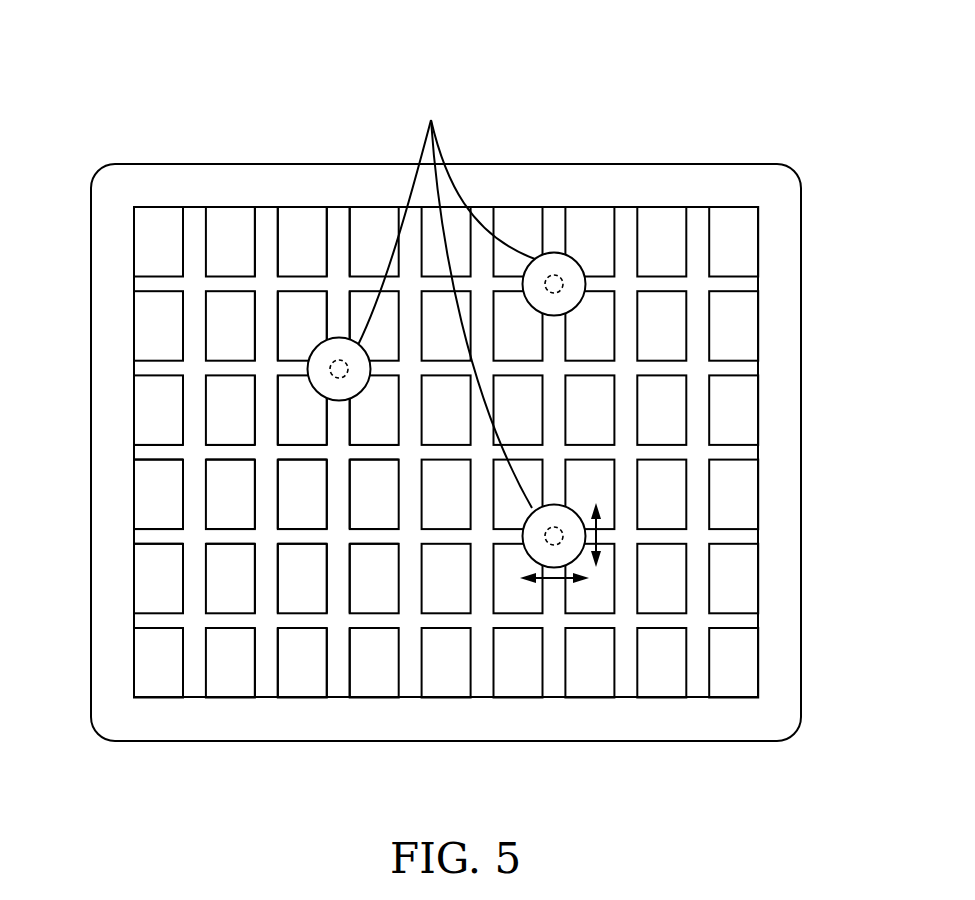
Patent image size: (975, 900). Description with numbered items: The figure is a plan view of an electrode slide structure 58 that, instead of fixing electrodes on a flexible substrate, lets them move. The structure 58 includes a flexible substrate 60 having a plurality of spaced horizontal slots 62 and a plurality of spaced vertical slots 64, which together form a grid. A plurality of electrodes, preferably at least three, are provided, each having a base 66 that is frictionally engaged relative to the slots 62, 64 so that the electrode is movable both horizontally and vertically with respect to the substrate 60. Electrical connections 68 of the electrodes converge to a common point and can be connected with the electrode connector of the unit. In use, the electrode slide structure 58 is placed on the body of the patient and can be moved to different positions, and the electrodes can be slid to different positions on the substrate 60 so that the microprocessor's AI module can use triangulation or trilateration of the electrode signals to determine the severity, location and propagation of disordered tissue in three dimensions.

The electrode slide structure 58 is at (190, 54).
The flexible substrate 60 is at (515, 680).
The horizontal slots 62 is at (192, 448).
The vertical slots 64 is at (265, 680).
The base 66 is at (330, 369).
The electrical connections 68 is at (427, 155).